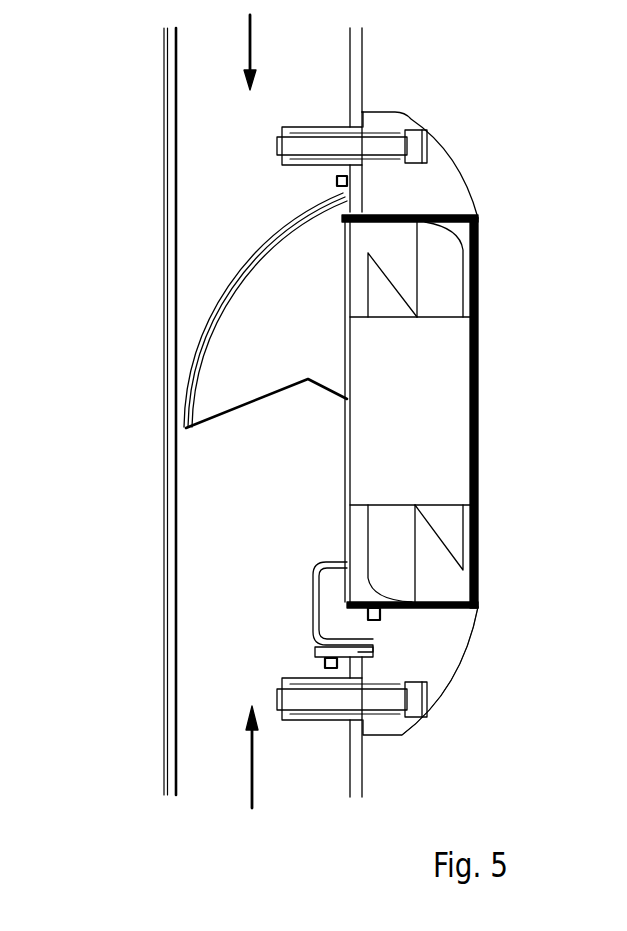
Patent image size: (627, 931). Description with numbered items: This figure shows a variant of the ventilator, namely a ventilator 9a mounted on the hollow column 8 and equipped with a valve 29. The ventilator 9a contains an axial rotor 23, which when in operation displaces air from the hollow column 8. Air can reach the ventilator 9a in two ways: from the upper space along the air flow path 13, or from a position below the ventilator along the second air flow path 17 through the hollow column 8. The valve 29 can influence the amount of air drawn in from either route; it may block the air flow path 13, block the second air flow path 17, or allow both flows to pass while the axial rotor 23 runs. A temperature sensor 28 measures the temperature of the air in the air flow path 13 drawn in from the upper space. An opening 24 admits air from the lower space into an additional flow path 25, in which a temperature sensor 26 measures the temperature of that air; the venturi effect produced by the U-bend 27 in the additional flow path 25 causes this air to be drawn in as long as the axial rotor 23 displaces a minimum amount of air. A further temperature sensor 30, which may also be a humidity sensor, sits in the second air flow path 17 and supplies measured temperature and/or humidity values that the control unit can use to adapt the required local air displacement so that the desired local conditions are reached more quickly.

The hollow column 8 is at (167, 92).
The air flow path 13 is at (253, 62).
The second air flow path 17 is at (250, 753).
The ventilator 9a is at (448, 192).
The temperature sensor 28 is at (337, 181).
The valve 29 is at (287, 259).
The axial rotor 23 is at (442, 378).
The U-bend 27 is at (318, 596).
The temperature sensor 26 is at (382, 617).
The opening 24 is at (393, 652).
The additional flow path 25 is at (470, 647).
The further temperature sensor 30 is at (324, 663).